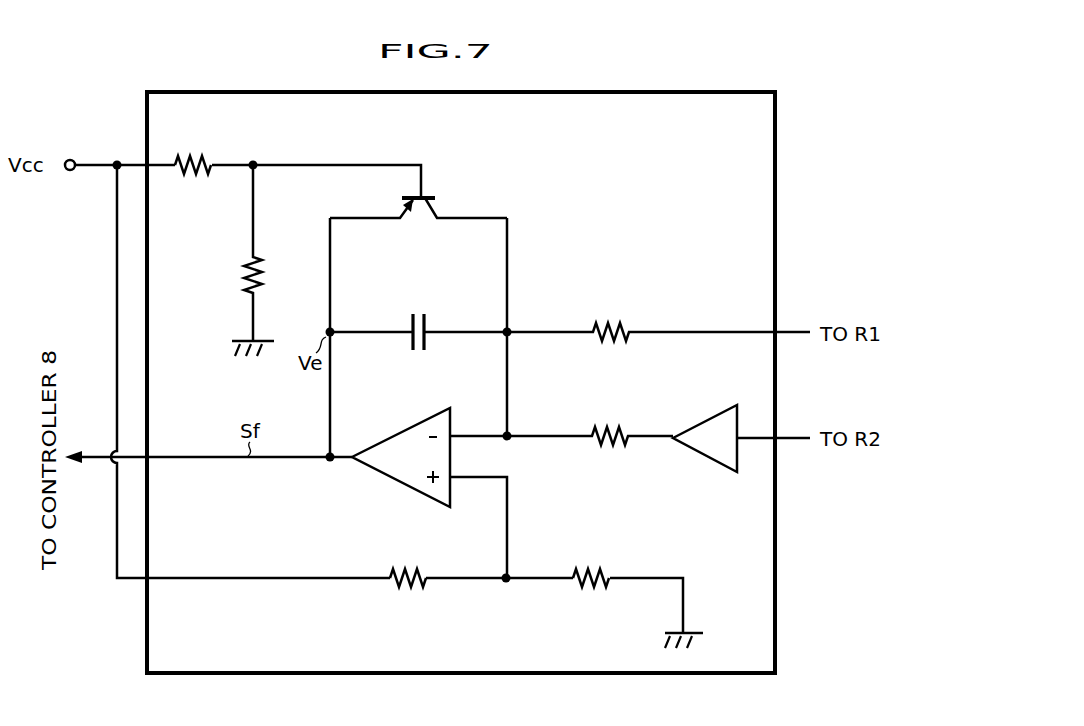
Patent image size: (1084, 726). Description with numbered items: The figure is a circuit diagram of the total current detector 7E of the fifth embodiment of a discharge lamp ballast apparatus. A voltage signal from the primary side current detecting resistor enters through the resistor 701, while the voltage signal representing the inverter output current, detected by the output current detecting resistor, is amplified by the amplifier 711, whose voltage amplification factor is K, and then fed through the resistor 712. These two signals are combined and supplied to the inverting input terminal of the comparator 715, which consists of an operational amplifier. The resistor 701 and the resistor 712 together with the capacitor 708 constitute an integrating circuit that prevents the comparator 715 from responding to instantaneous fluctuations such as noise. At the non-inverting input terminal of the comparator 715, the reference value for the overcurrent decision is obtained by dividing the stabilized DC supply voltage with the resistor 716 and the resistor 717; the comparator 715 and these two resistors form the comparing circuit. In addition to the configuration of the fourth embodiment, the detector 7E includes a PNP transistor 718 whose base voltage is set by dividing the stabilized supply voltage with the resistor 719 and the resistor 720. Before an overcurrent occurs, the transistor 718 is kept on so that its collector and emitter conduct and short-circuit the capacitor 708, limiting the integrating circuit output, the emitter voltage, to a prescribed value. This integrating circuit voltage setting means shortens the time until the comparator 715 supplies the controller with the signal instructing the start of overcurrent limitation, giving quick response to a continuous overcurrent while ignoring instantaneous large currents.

The total current detector 7E is at (682, 90).
The resistor 719 is at (194, 149).
The resistor 720 is at (233, 277).
The transistor 718 is at (441, 207).
The capacitor 708 is at (416, 311).
The resistor 701 is at (610, 311).
The comparator 715 is at (410, 424).
The resistor 712 is at (610, 423).
The amplifier 711 is at (710, 417).
The resistor 716 is at (408, 563).
The resistor 717 is at (591, 563).